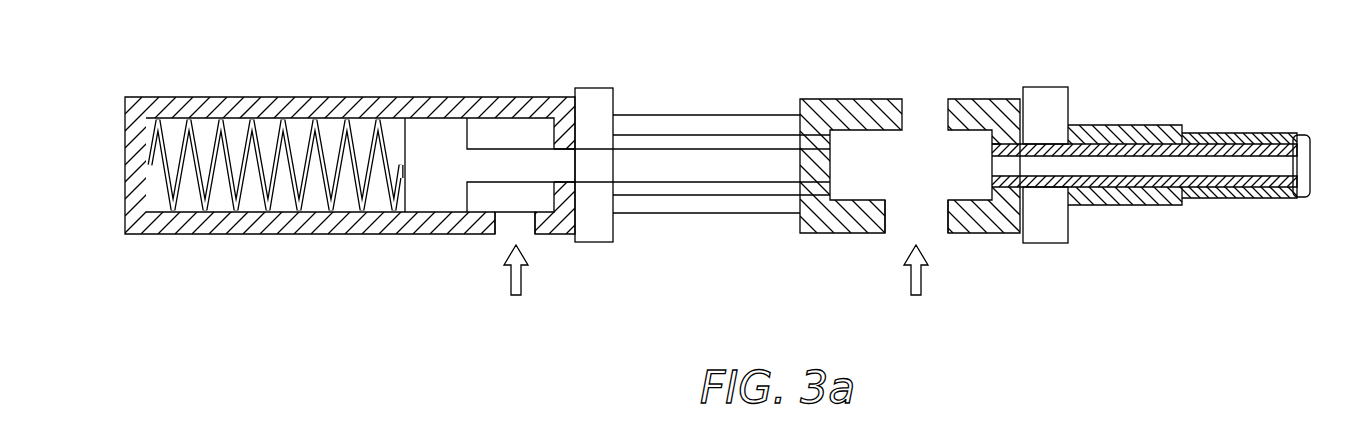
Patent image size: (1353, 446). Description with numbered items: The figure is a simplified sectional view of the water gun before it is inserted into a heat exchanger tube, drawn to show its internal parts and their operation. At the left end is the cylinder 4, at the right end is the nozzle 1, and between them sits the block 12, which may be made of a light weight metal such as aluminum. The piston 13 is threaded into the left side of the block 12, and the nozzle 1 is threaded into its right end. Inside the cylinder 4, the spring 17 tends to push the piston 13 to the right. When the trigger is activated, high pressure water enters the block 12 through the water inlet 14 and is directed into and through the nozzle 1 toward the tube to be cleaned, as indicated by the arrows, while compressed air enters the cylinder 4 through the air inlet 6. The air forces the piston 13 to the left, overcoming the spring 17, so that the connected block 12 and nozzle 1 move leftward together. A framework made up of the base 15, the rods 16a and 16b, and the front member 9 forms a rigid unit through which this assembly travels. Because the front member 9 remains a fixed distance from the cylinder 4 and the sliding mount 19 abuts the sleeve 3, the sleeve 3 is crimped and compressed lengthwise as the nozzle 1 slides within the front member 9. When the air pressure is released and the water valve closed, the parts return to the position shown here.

The nozzle 1 is at (1249, 68).
The sleeve 3 is at (1233, 200).
The cylinder 4 is at (243, 97).
The air inlet 6 is at (507, 234).
The front member 9 is at (1068, 104).
The block 12 is at (855, 99).
The piston 13 is at (440, 147).
The water inlet 14 is at (900, 233).
The base 15 is at (614, 104).
The rod 16a is at (748, 115).
The rod 16b is at (703, 213).
The spring 17 is at (318, 120).
The sliding mount 19 is at (1107, 207).